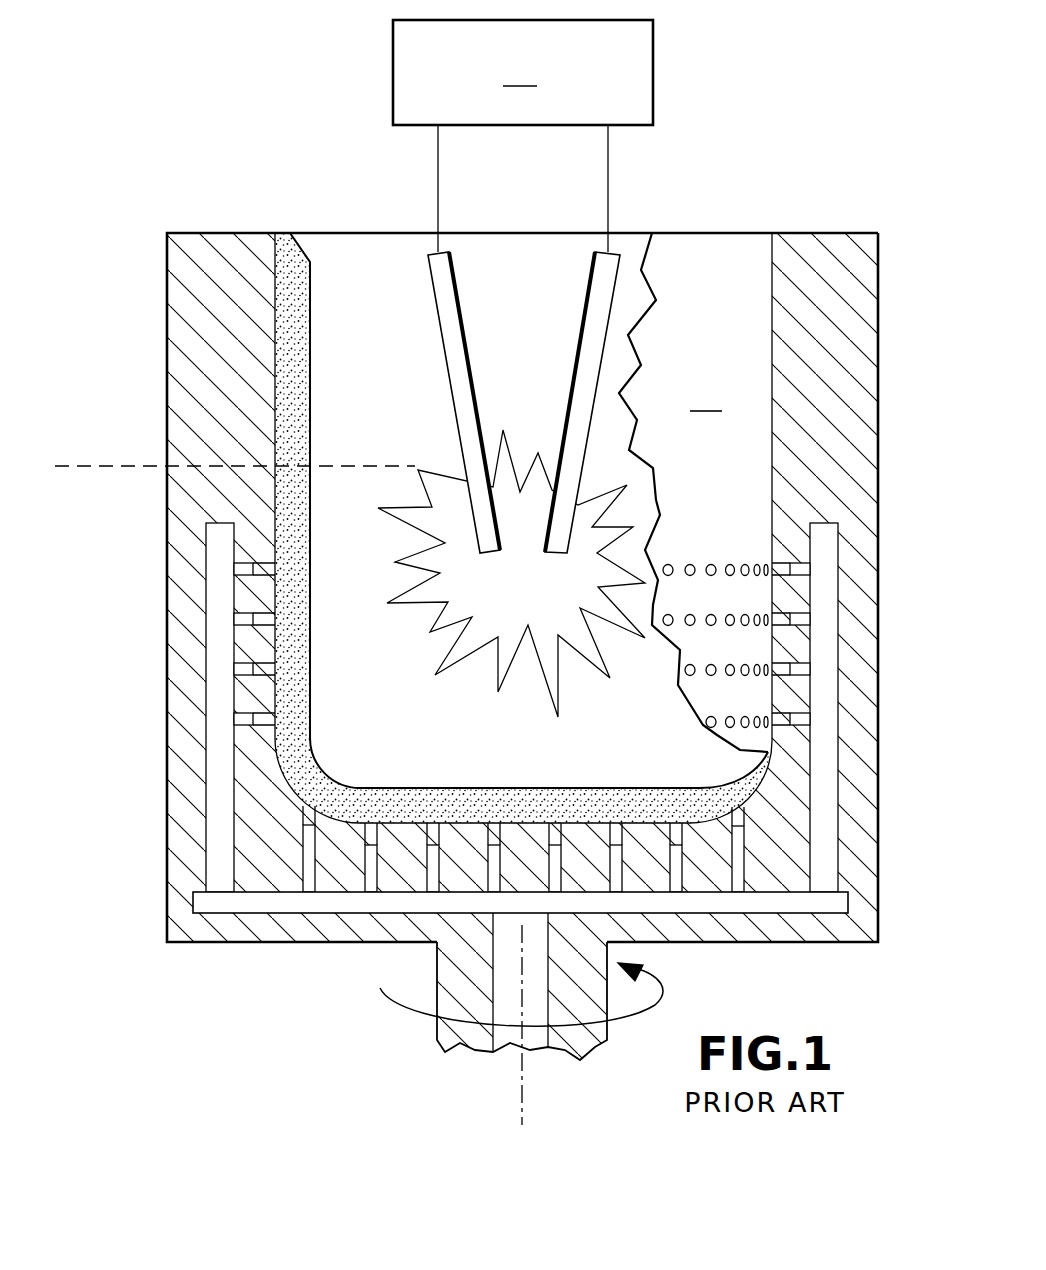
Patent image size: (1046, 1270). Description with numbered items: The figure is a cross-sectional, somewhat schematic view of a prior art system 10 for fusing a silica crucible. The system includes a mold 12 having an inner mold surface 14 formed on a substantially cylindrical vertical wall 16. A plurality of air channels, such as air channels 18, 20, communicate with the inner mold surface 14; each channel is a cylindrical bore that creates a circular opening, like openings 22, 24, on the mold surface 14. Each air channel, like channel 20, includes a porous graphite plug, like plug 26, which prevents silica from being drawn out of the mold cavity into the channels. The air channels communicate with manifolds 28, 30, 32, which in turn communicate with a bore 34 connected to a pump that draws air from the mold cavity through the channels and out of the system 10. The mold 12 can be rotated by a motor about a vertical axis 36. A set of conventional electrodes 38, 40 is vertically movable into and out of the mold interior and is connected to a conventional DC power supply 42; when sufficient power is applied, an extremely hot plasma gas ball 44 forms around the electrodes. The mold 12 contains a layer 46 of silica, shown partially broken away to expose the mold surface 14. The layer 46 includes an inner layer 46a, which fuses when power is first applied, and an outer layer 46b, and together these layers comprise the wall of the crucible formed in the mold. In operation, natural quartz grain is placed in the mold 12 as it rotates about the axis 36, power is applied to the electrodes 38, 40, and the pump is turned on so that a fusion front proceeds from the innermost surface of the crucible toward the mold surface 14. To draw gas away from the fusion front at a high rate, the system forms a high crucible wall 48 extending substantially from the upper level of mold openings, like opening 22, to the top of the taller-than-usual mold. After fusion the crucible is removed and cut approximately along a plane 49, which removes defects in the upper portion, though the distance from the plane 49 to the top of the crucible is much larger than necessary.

The system 10 is at (503, 572).
The mold 12 is at (878, 385).
The inner mold surface 14 is at (670, 366).
The substantially cylindrical vertical wall 16 is at (771, 318).
The air channel 18 is at (236, 722).
The air channel 20 is at (492, 901).
The opening 22 is at (688, 560).
The opening 24 is at (680, 657).
The porous graphite plug 26 is at (302, 825).
The manifold 28 is at (220, 585).
The manifold 30 is at (826, 662).
The manifold 32 is at (786, 905).
The bore 34 is at (510, 1043).
The vertical axis 36 is at (527, 1085).
The electrode 38 is at (456, 292).
The electrode 40 is at (582, 340).
The DC power supply 42 is at (523, 72).
The plasma gas ball 44 is at (440, 648).
The layer of silica 46 is at (507, 503).
The inner layer 46a is at (311, 350).
The outer layer 46b is at (276, 265).
The crucible wall 48 is at (296, 425).
The plane 49 is at (104, 462).